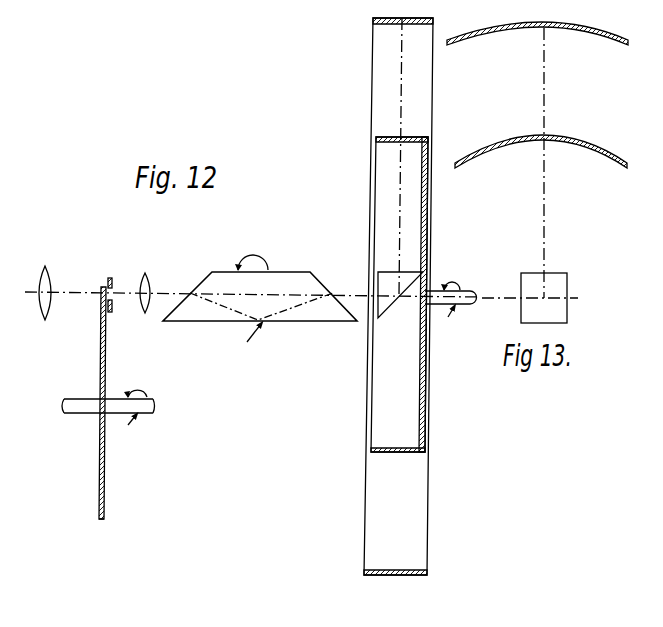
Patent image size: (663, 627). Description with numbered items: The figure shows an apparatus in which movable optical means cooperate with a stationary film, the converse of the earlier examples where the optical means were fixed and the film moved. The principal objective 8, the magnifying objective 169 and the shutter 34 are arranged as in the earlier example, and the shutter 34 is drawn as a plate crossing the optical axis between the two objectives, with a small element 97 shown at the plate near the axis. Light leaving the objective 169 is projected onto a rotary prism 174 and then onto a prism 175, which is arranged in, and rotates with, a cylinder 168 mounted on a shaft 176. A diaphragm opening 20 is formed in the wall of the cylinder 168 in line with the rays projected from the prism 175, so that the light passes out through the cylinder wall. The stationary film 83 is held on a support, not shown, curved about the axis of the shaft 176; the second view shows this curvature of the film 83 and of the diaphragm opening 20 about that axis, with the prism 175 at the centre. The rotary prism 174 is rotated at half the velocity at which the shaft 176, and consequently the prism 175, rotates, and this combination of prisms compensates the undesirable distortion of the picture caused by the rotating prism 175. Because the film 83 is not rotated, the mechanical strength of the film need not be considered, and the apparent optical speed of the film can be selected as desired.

In FIG. 12, the principal objective 8 is at (53, 290).
In FIG. 12, the slit plate 97 is at (103, 283).
In FIG. 12, the shutter 34 is at (105, 481).
In FIG. 12, the magnifying objective 169 is at (148, 282).
In FIG. 12, the rotary prism 174 is at (284, 278).
In FIG. 12, the stationary film 83 is at (372, 21).
In FIG. 13, the stationary film 83 is at (593, 30).
In FIG. 12, the diaphragm opening 20 is at (413, 138).
In FIG. 13, the diaphragm opening 20 is at (557, 137).
In FIG. 12, the cylinder 168 is at (428, 432).
In FIG. 12, the prism 175 is at (400, 306).
In FIG. 13, the prism 175 is at (568, 287).
In FIG. 12, the shaft 176 is at (466, 291).